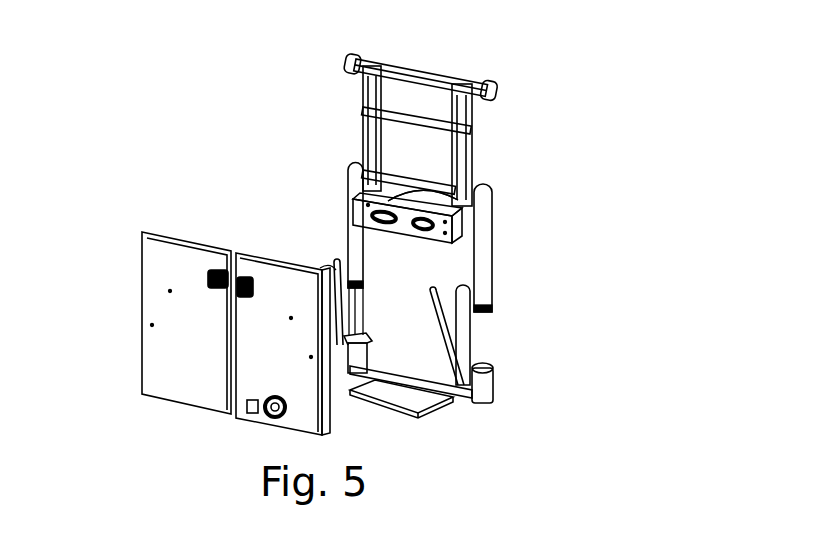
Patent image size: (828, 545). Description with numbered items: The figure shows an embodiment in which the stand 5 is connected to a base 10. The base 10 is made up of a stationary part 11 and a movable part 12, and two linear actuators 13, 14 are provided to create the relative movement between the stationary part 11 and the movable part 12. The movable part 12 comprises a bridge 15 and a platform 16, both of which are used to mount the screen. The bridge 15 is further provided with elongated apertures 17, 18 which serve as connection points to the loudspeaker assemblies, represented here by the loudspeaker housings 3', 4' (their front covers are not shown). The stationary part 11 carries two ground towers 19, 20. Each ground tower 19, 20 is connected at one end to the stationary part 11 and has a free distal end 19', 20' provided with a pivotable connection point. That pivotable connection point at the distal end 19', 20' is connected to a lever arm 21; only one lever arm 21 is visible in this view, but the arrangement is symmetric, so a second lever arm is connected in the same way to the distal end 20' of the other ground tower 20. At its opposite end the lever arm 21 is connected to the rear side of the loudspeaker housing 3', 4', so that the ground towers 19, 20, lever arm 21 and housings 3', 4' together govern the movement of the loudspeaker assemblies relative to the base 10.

The loudspeaker housing 3' is at (319, 352).
The loudspeaker housing 4' is at (150, 323).
The stand 5 is at (440, 407).
The base 10 is at (594, 88).
The stationary part 11 is at (493, 383).
The movable part 12 is at (477, 148).
The linear actuator 13 is at (487, 250).
The linear actuator 14 is at (347, 228).
The bridge 15 is at (352, 197).
The platform 16 is at (452, 78).
The elongated aperture 17 is at (458, 200).
The elongated aperture 18 is at (423, 195).
The ground tower 19 is at (522, 335).
The free distal end 19' is at (535, 256).
The ground tower 20 is at (288, 245).
The free distal end 20' is at (290, 270).
The lever arm 21 is at (440, 337).